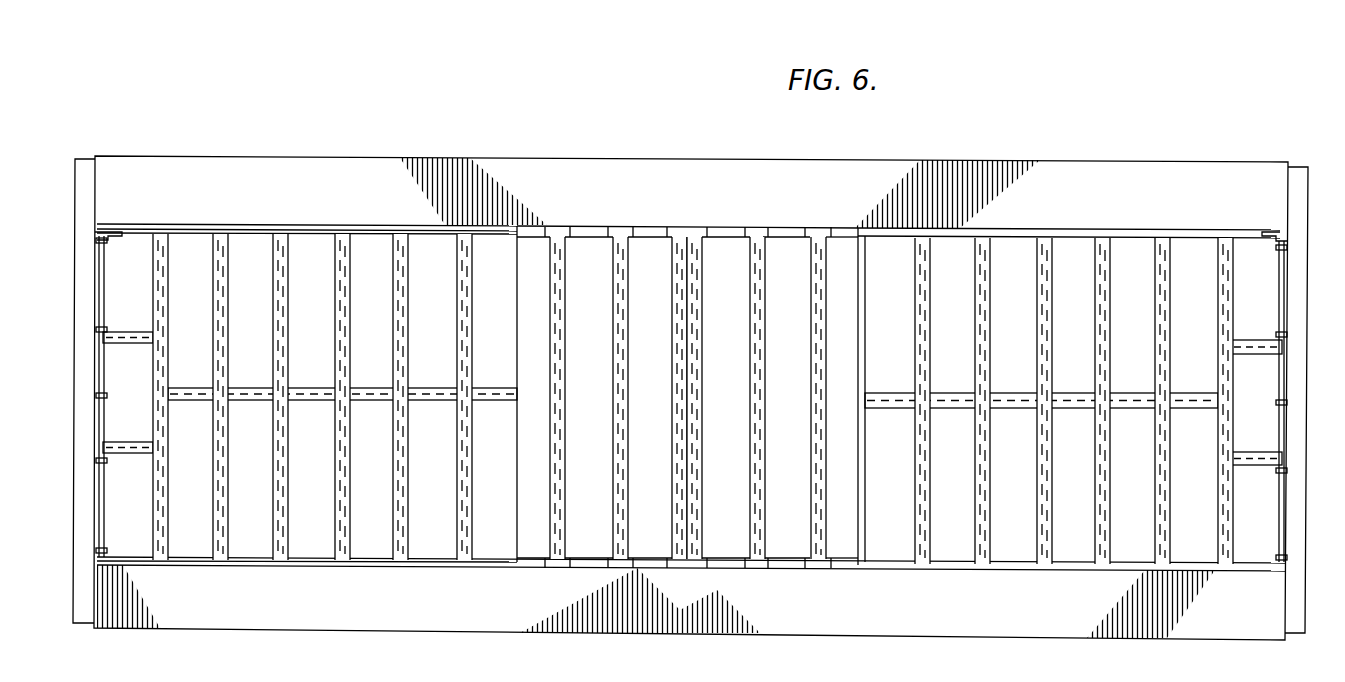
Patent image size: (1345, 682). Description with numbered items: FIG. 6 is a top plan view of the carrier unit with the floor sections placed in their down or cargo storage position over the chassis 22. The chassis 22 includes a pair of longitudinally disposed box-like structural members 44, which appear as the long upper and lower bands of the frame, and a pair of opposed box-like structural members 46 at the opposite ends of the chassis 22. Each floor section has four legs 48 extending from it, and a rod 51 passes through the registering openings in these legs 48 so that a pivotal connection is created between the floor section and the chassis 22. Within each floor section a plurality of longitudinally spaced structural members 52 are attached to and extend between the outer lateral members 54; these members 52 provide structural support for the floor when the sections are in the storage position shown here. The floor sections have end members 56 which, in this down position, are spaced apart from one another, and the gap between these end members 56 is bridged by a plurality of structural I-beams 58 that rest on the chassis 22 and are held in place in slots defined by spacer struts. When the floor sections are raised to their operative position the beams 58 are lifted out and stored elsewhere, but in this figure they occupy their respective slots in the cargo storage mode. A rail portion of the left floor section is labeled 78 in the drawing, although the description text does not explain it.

The chassis 22 is at (752, 174).
The box-like structural members 44 is at (1103, 205).
The opposed box-like structural members 46 is at (82, 622).
The legs 48 is at (1250, 340).
The rod 51 is at (1280, 365).
The longitudinally spaced structural members 52 is at (975, 342).
The outer lateral members 54 is at (1127, 240).
The end members 56 is at (862, 316).
The structural I-beams 58 is at (613, 500).
The top rail 78 is at (386, 223).